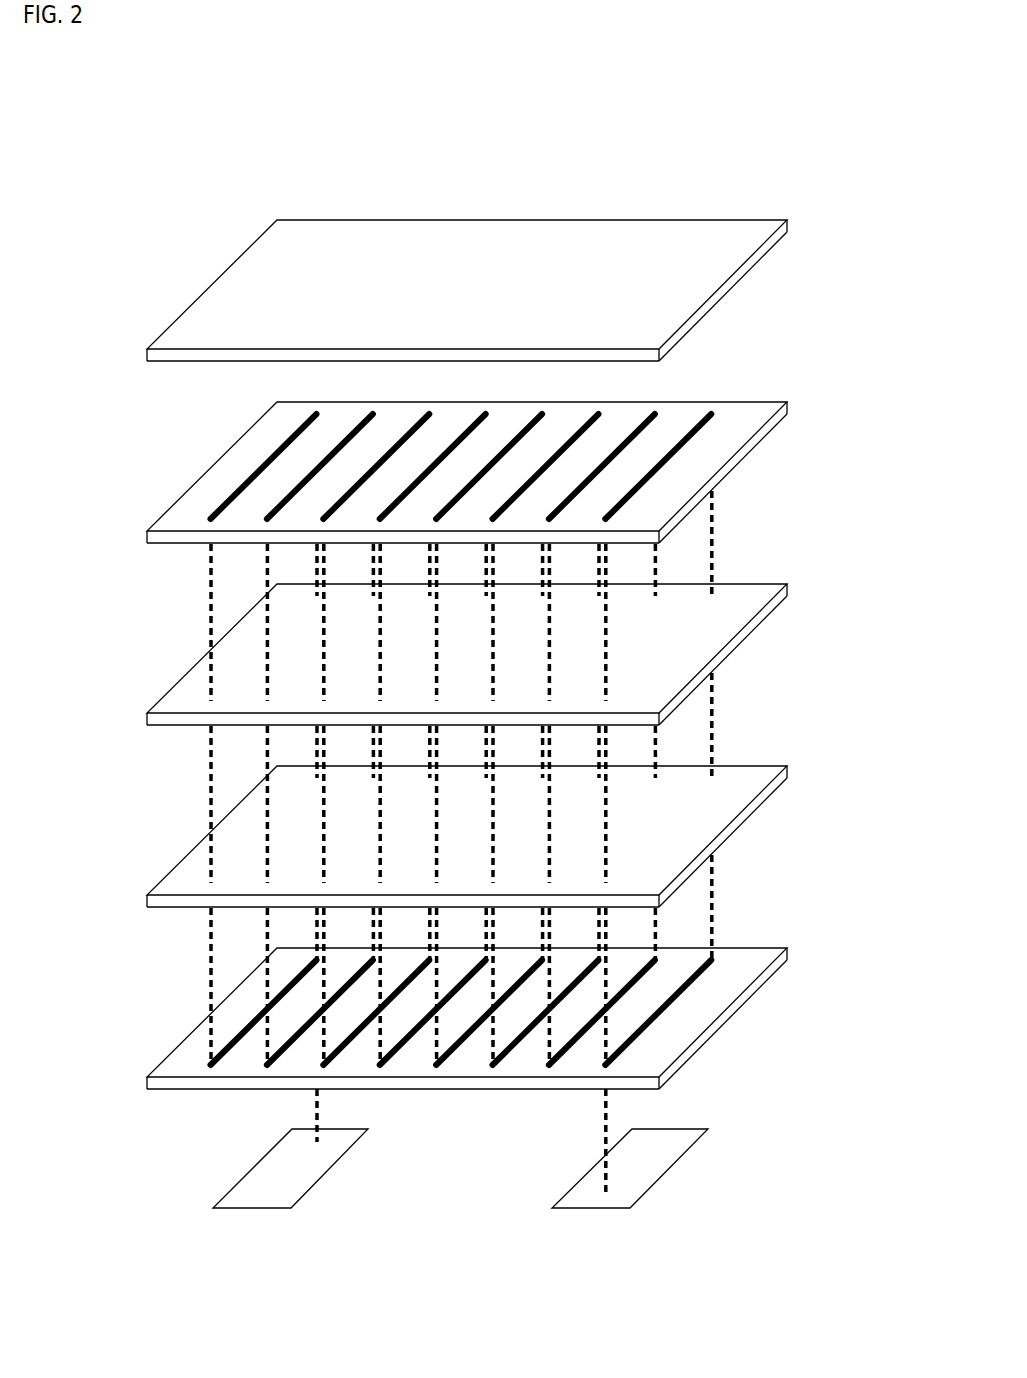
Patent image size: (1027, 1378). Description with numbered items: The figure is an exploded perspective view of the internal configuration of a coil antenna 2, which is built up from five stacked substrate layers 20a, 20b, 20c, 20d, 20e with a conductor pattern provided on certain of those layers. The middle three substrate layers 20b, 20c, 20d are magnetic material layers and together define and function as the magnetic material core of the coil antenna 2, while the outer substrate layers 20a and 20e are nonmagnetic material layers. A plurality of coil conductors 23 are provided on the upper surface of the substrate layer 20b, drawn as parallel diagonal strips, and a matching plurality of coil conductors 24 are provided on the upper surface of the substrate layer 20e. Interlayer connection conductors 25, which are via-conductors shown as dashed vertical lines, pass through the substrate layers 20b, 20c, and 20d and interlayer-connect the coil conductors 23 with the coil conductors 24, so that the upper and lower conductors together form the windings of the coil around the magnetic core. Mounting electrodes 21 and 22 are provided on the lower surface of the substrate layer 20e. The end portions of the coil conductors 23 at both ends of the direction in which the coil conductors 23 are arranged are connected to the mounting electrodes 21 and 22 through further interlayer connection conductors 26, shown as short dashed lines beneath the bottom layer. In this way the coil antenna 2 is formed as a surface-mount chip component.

The coil antenna 2 is at (769, 149).
The substrate layer 20a is at (773, 225).
The substrate layer 20b is at (773, 407).
The substrate layer 20c is at (773, 589).
The substrate layer 20d is at (773, 771).
The substrate layer 20e is at (773, 953).
The mounting electrode 21 is at (298, 1178).
The mounting electrode 22 is at (640, 1177).
The coil conductors 23 is at (678, 437).
The coil conductors 24 is at (247, 1038).
The interlayer connection conductors 25 is at (709, 530).
The interlayer connection conductors 26 is at (316, 1112).